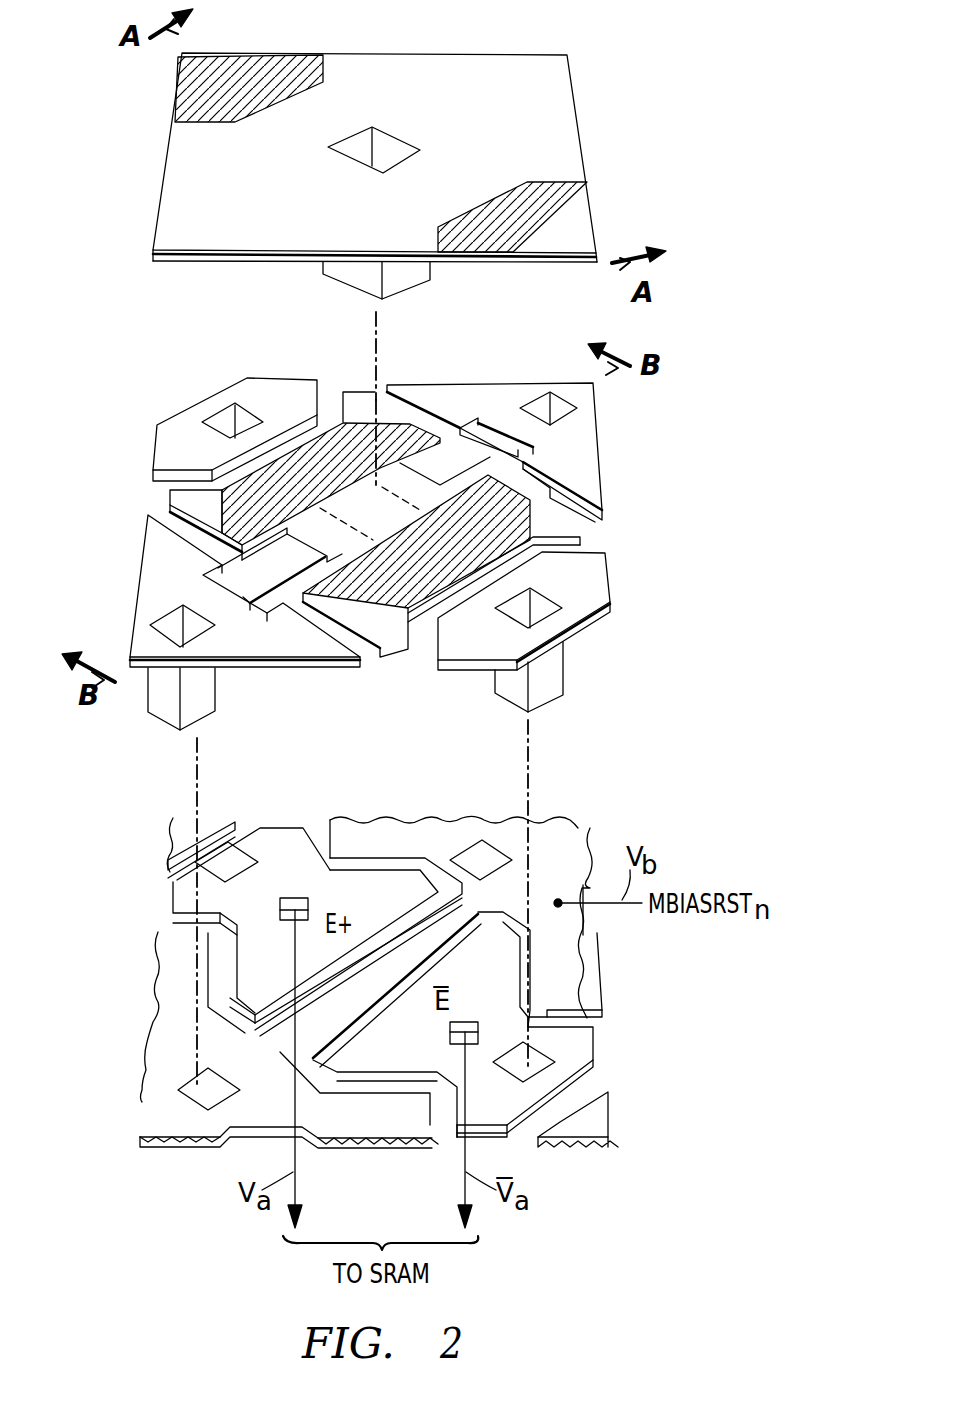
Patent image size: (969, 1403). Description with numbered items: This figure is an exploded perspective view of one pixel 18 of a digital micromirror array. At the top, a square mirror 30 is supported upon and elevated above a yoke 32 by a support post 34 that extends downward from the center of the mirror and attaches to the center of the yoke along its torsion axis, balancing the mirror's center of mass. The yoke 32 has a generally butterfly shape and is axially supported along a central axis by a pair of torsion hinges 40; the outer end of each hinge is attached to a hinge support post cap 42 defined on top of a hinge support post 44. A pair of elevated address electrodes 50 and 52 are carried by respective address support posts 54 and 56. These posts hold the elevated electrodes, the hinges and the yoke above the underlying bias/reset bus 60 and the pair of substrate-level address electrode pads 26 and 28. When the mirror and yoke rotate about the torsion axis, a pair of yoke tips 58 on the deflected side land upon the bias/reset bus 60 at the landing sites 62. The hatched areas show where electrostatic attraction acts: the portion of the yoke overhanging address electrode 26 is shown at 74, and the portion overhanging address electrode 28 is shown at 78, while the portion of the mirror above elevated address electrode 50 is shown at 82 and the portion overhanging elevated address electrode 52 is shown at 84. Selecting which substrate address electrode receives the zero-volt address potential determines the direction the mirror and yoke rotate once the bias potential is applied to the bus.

The pixel 18 is at (712, 404).
The address electrode 26 is at (372, 875).
The address electrode 28 is at (583, 1052).
The mirror 30 is at (500, 60).
The yoke 32 is at (394, 527).
The support post 34 is at (352, 272).
The torsion hinge 40 is at (503, 433).
The hinge support post cap 42 is at (143, 603).
The hinge support post 44 is at (165, 715).
The elevated address electrode 50 is at (160, 445).
The elevated address electrode 52 is at (598, 575).
The address support post 54 is at (515, 695).
The address support post 56 is at (225, 418).
The yoke tip 58 is at (352, 392).
The bias/reset bus 60 is at (143, 1105).
The landing site 62 is at (350, 832).
The hatched portion of yoke 74 is at (404, 420).
The hatched region of yoke 78 is at (520, 488).
The portion of mirror 82 is at (180, 108).
The portion of mirror 84 is at (585, 200).